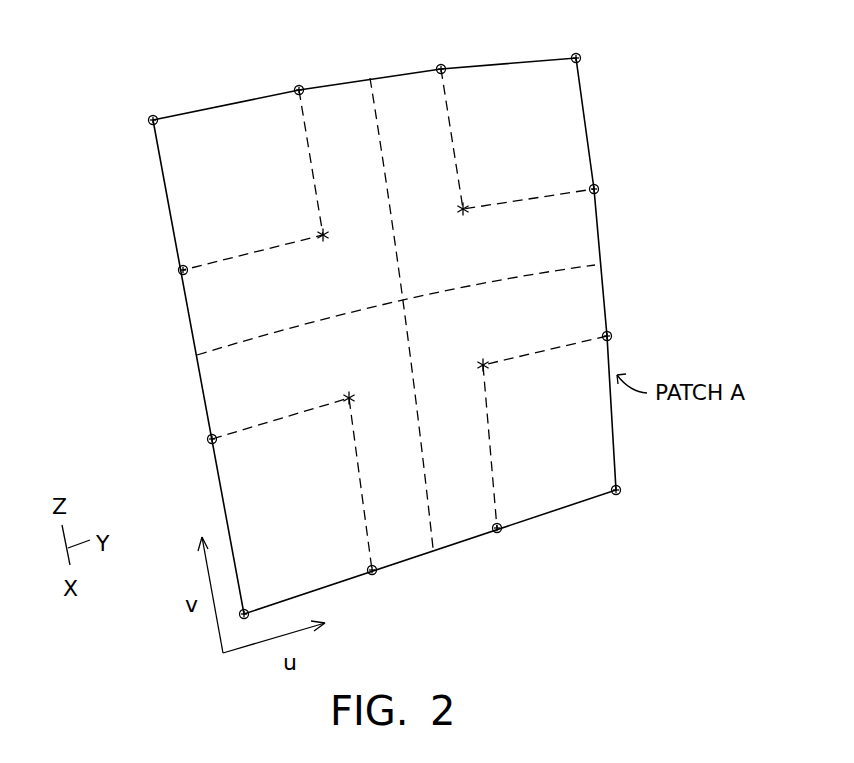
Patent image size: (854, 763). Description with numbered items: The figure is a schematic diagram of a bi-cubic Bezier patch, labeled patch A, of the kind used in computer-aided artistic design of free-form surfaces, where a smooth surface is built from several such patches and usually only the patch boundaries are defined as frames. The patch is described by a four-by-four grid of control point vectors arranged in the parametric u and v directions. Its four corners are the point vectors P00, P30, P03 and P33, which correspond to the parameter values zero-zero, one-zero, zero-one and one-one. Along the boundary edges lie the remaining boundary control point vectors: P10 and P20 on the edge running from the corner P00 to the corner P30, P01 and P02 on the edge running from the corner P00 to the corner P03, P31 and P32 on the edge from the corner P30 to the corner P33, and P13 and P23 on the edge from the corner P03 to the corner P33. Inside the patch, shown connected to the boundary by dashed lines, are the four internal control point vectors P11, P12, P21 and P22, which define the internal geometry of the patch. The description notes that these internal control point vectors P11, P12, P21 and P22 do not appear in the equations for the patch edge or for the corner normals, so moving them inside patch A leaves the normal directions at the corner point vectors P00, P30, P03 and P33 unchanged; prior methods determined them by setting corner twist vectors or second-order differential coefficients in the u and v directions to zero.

The corner point vector P00 is at (247, 609).
The boundary control point vector P10 is at (376, 566).
The boundary control point vector P20 is at (500, 523).
The corner point vector P30 is at (614, 486).
The boundary control point vector P01 is at (214, 433).
The internal control point vector P11 is at (350, 392).
The internal control point vector P21 is at (462, 371).
The boundary control point vector P31 is at (603, 334).
The boundary control point vector P02 is at (187, 266).
The internal control point vector P12 is at (348, 238).
The internal control point vector P22 is at (459, 203).
The boundary control point vector P32 is at (590, 187).
The corner point vector P03 is at (150, 113).
The boundary control point vector P13 is at (310, 75).
The boundary control point vector P23 is at (454, 53).
The corner point vector P33 is at (578, 52).